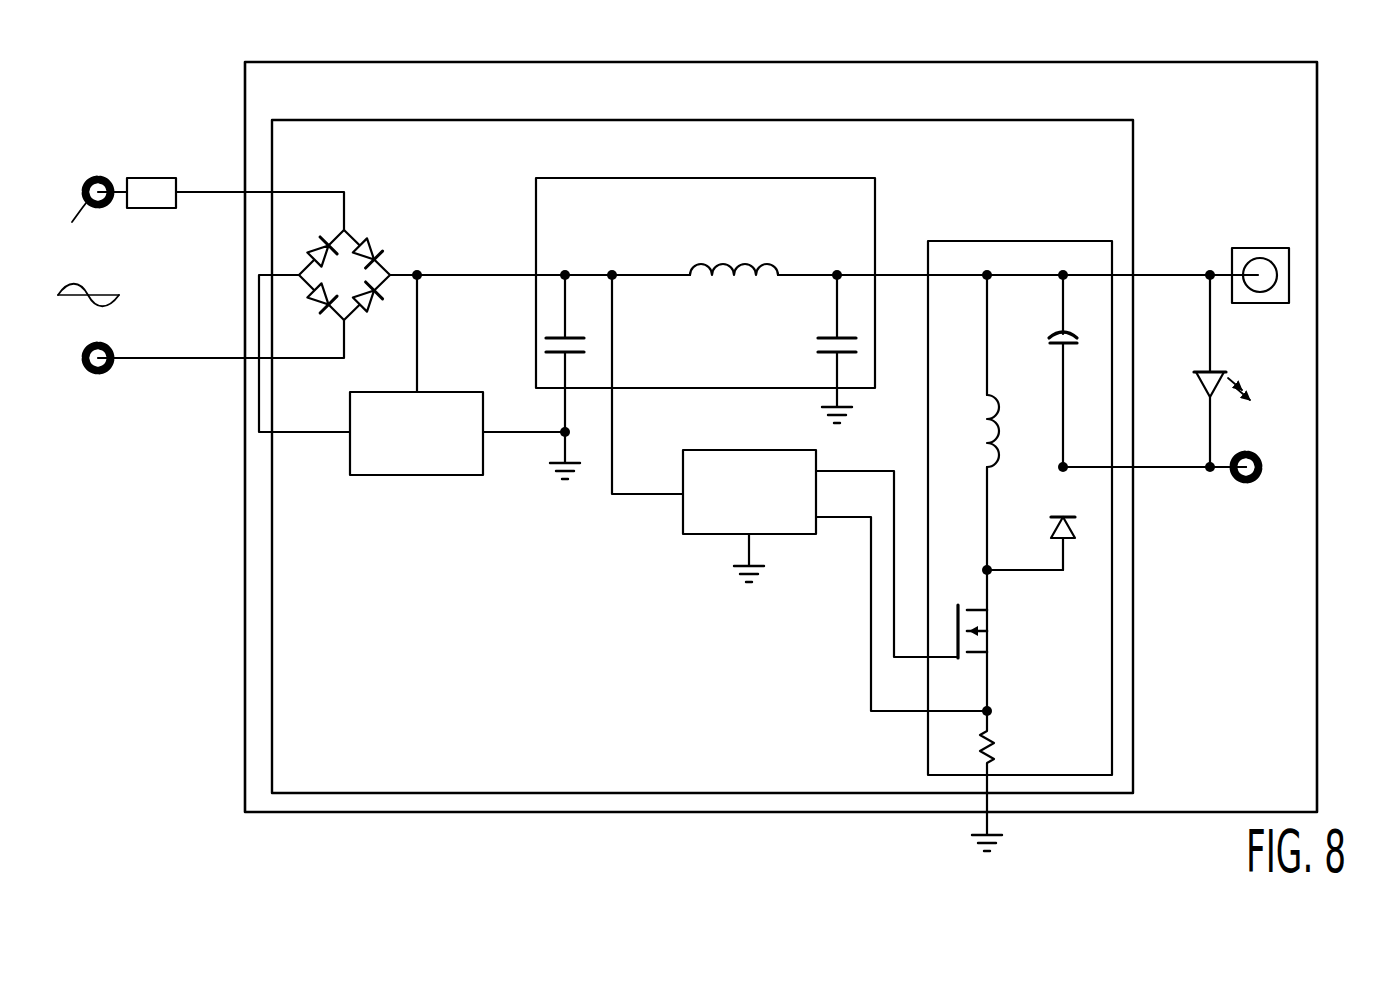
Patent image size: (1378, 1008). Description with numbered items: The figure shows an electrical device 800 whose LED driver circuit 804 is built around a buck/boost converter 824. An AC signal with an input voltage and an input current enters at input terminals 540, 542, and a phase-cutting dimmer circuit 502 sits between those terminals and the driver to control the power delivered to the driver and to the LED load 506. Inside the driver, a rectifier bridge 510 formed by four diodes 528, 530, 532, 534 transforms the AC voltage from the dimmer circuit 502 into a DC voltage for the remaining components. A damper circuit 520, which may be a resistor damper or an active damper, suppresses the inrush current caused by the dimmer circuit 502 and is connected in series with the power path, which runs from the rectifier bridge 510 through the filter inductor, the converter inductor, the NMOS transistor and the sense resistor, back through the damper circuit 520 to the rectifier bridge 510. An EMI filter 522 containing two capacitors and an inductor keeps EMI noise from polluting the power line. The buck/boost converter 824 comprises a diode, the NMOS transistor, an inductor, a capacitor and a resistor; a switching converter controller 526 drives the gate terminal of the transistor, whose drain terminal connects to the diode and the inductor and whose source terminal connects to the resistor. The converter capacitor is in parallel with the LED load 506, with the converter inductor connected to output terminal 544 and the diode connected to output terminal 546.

The electrical device 800 is at (355, 812).
The LED driver circuit 804 is at (272, 612).
The phase-cutting dimmer circuit 502 is at (150, 178).
The input terminal 540 is at (90, 182).
The input terminal 542 is at (96, 378).
The rectifier bridge 510 is at (380, 226).
The diode 528 is at (318, 249).
The diode 530 is at (318, 301).
The diode 532 is at (367, 306).
The diode 534 is at (378, 249).
The damper circuit 520 is at (452, 392).
The EMI filter 522 is at (875, 212).
The switching converter controller 526 is at (683, 513).
The buck/boost converter 824 is at (1032, 241).
The LED load 506 is at (1224, 370).
The output terminal 544 is at (1260, 248).
The output terminal 546 is at (1248, 486).